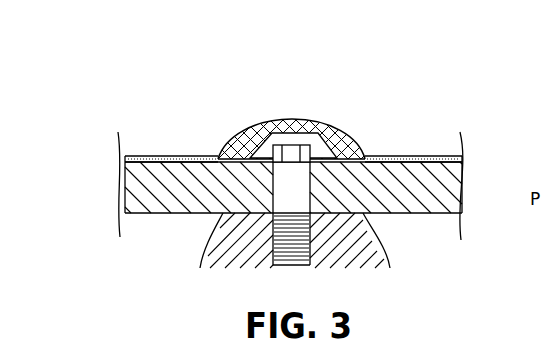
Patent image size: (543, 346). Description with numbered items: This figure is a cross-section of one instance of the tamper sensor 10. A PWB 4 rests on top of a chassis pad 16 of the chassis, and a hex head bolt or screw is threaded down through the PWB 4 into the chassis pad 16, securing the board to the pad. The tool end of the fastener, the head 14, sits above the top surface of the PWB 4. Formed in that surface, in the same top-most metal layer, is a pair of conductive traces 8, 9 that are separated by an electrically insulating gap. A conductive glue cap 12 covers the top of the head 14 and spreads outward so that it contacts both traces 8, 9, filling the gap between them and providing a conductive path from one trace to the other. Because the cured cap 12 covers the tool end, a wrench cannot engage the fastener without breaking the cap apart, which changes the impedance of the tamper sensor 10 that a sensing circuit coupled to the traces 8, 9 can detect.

The PWB 4 is at (130, 200).
The circuit trace 8 is at (170, 157).
The circuit trace 9 is at (437, 153).
The tamper sensor 10 is at (327, 49).
The conductive glue cap 12 is at (355, 107).
The head 14 is at (282, 150).
The chassis pad 16 is at (353, 260).